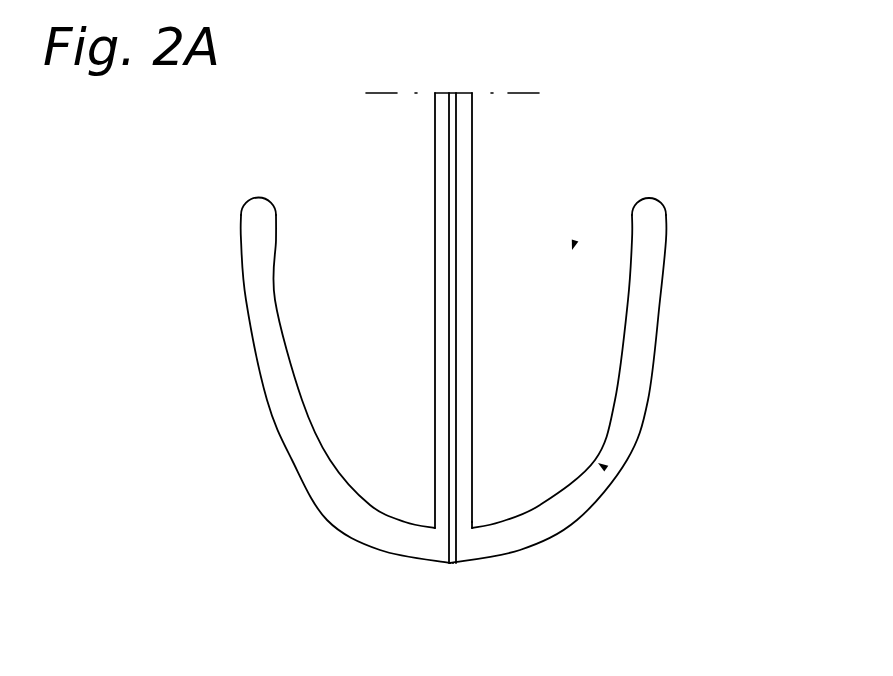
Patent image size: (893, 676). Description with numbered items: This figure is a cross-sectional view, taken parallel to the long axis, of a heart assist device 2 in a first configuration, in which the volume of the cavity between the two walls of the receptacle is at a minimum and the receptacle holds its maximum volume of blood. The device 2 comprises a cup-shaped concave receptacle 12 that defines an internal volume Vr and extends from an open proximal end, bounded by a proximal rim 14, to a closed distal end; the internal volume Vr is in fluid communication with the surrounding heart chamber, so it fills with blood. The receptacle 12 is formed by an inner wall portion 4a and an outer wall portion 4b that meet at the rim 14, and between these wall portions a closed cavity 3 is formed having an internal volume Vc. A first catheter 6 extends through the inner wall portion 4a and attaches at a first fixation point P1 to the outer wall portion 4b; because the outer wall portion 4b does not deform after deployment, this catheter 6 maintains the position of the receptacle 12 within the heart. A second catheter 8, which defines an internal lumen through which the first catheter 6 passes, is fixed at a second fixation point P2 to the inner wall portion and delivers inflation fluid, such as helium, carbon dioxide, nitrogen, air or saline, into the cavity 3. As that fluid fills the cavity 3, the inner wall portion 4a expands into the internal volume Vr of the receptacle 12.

The heart assist device 2 is at (787, 270).
The closed cavity 3 is at (342, 515).
The inner wall portion 4a is at (276, 262).
The outer wall portion 4b is at (657, 342).
The first catheter 6 is at (452, 350).
The second catheter 8 is at (472, 158).
The concave receptacle 12 is at (238, 312).
The proximal rim 14 is at (257, 198).
The first fixation point P1 is at (453, 563).
The second fixation point P2 is at (472, 520).
The internal volume of the receptacle Vr is at (572, 250).
The internal volume of the cavity Vc is at (598, 463).